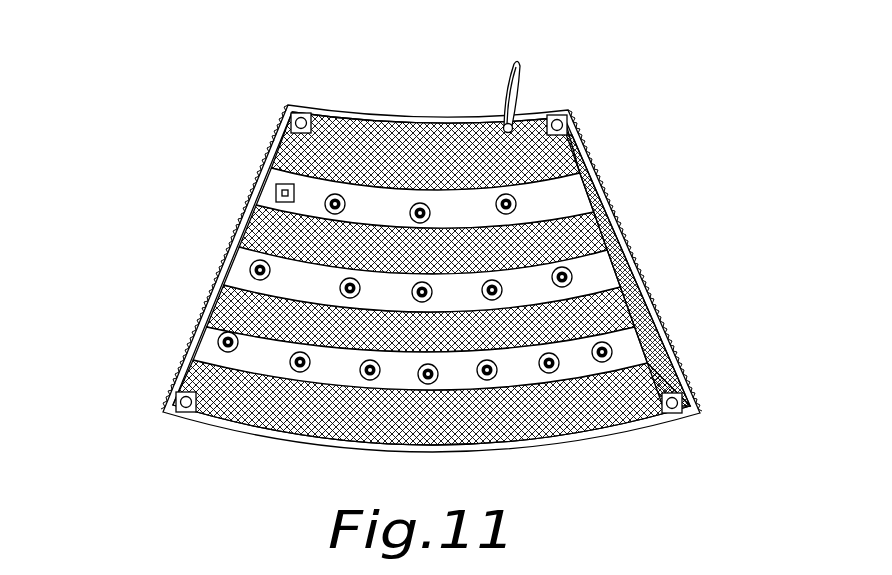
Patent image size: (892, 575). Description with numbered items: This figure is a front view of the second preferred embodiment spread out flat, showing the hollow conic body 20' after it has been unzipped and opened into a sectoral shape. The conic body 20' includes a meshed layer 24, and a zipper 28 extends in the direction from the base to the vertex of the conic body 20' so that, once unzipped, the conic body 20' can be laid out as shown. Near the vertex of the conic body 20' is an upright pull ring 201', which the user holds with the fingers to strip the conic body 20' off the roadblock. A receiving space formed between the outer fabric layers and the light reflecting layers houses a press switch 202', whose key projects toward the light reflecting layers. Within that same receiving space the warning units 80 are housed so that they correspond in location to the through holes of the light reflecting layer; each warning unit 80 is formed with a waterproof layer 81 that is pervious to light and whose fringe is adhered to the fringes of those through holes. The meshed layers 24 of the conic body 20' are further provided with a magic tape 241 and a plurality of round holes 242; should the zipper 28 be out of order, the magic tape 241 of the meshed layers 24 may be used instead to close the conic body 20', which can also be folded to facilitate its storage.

The hollow conic body 20' is at (431, 227).
The meshed layer 24 is at (338, 115).
The zipper 28 is at (218, 275).
The warning unit 80 is at (221, 338).
The waterproof layer 81 is at (268, 195).
The magic tape 241 is at (603, 213).
The round hole 242 is at (287, 107).
The upright pull ring 201' is at (581, 80).
The press switch 202' is at (228, 164).